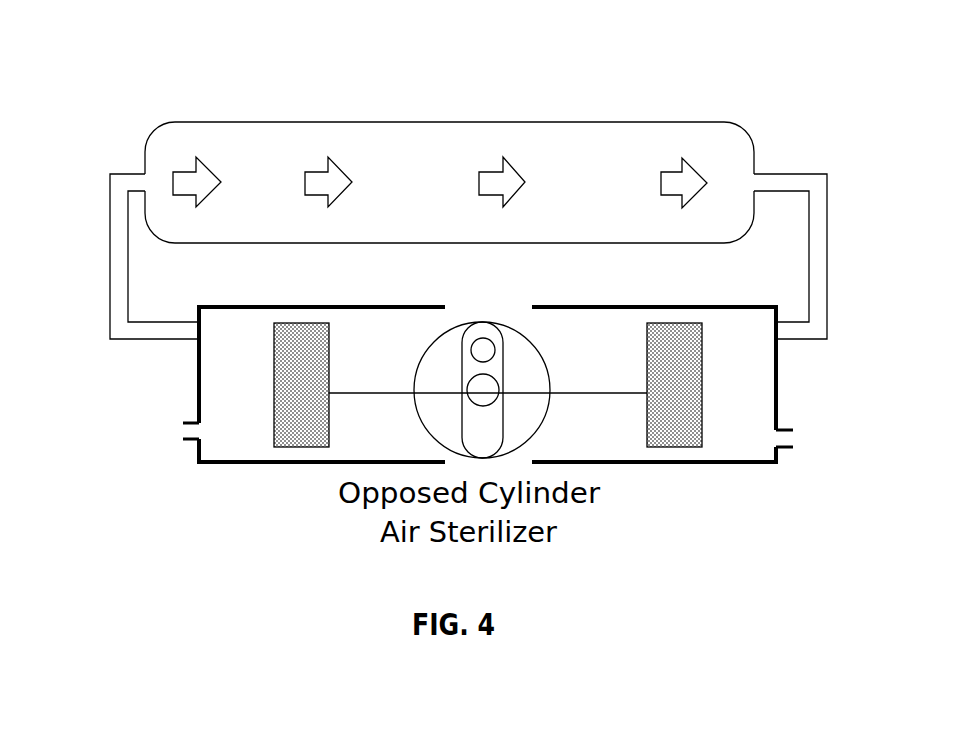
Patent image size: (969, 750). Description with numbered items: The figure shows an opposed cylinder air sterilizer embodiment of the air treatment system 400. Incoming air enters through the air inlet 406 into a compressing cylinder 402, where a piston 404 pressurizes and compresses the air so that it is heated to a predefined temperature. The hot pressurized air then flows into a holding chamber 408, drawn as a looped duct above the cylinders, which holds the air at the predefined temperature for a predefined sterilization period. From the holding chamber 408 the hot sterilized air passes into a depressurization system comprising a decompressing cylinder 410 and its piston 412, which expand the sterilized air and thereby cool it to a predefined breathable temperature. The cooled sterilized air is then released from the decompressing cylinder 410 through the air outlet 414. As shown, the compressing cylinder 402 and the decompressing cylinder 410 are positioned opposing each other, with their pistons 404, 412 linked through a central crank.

The system 400 is at (136, 100).
The compressing cylinder 402 is at (226, 457).
The piston 404 is at (308, 427).
The air inlet 406 is at (190, 433).
The holding chamber 408 is at (410, 138).
The decompressing cylinder 410 is at (743, 468).
The piston 412 is at (672, 427).
The air outlet 414 is at (790, 440).